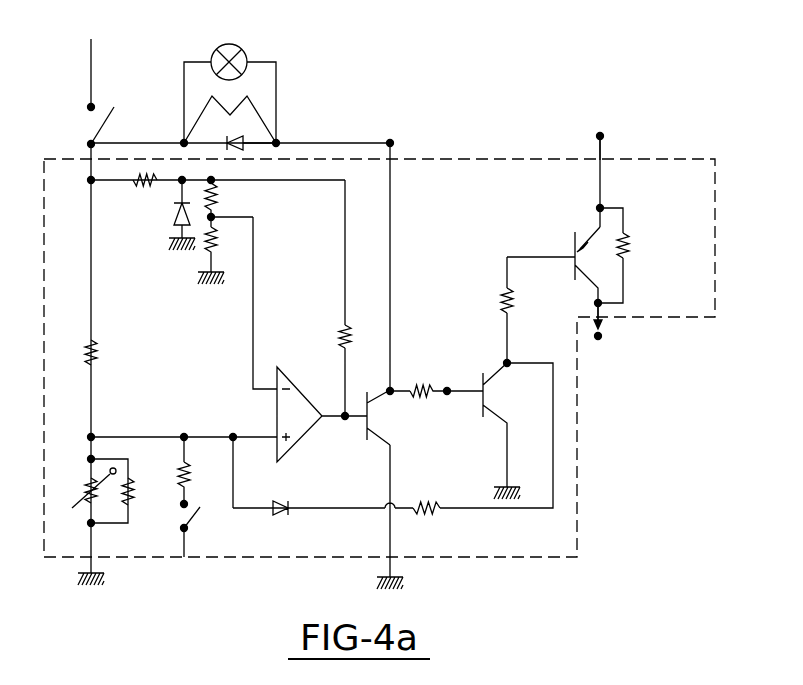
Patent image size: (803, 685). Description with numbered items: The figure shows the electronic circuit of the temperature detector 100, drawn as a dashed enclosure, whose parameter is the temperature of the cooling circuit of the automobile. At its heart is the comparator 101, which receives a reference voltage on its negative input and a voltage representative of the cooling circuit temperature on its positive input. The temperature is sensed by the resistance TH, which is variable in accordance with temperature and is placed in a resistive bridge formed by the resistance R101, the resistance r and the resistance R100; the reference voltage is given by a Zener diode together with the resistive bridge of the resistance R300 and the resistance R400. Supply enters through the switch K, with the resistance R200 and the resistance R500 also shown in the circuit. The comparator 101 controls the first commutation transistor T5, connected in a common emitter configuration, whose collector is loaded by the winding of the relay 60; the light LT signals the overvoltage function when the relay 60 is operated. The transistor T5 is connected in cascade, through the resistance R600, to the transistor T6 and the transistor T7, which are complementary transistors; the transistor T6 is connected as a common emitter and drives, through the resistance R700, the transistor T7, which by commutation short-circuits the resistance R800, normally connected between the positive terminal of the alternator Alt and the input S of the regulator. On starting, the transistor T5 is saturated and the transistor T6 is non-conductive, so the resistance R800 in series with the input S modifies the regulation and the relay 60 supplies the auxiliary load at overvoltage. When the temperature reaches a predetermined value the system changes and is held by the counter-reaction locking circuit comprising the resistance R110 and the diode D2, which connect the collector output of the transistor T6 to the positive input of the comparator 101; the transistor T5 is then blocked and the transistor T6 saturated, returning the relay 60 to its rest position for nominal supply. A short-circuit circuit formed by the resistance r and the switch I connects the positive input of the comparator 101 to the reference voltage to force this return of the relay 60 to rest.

The temperature detector 100 is at (427, 184).
The switch K is at (95, 121).
The light LT is at (230, 83).
The relay 60 is at (200, 112).
The resistor R200 is at (156, 206).
The resistance R300 is at (241, 198).
The resistance R400 is at (242, 244).
The resistor R500 is at (314, 338).
The resistance R101 is at (116, 353).
The temperature-variable resistance Th is at (87, 482).
The resistance R100 is at (152, 491).
The resistance r is at (171, 470).
The switch I is at (179, 524).
The diode D2 is at (276, 522).
The comparator 101 is at (302, 418).
The first commutation transistor T5 is at (370, 415).
The resistor R600 is at (436, 375).
The transistor T6 is at (486, 392).
The resistance R110 is at (433, 492).
The resistor R700 is at (475, 299).
The transistor T7 is at (573, 252).
The resistance R800 is at (654, 245).
The alternator Alt is at (611, 131).
The input of the regulator S is at (598, 339).